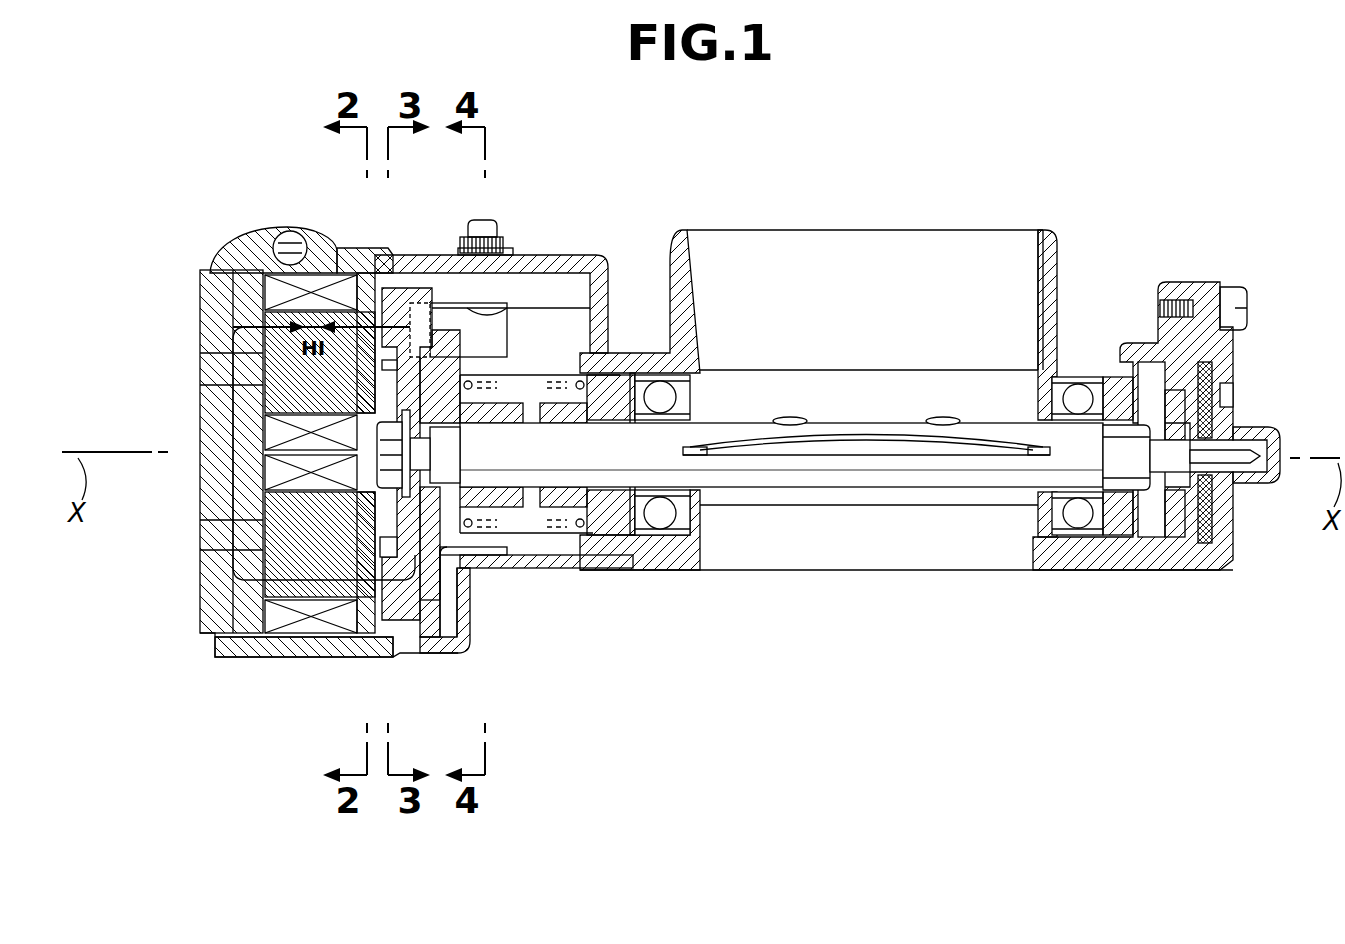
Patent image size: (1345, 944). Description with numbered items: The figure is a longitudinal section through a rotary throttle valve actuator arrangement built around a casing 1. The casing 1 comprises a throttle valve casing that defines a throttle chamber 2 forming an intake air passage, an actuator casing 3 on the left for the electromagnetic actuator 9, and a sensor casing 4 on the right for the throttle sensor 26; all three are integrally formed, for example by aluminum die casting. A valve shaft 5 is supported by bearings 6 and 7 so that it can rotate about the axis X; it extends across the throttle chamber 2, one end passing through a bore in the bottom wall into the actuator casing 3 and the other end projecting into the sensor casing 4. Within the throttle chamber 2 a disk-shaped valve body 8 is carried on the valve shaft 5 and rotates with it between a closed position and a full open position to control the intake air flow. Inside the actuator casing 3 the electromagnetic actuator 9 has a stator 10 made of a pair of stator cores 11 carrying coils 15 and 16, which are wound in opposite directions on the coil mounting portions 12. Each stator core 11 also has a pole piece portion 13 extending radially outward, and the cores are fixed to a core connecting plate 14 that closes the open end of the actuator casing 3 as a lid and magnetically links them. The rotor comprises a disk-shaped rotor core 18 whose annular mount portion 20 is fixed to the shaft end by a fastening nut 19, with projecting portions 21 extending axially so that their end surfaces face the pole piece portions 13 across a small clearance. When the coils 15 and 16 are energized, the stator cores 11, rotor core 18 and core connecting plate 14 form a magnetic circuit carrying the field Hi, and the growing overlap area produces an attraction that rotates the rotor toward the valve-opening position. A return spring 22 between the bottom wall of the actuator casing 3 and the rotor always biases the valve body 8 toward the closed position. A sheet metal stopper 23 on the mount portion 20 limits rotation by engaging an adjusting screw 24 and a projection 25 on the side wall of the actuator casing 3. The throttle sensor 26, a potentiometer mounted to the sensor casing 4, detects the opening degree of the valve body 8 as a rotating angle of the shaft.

The casing 1 is at (687, 230).
The throttle chamber 2 is at (1027, 263).
The actuator casing 3 is at (573, 265).
The sensor casing 4 is at (1175, 290).
The valve shaft 5 is at (955, 477).
The bearing 6 is at (677, 535).
The bearing 7 is at (1078, 524).
The valve body 8 is at (835, 452).
The electromagnetic actuator 9 is at (205, 268).
The stator 10 is at (270, 590).
The stator core 11 is at (277, 300).
The coil mounting portion 12 is at (278, 368).
The pole piece portion 13 is at (367, 277).
The core connecting plate 14 is at (218, 420).
The coil 15 is at (320, 280).
The coil 16 is at (270, 637).
The rotor core 18 is at (442, 620).
The fastening nut 19 is at (375, 460).
The mount portion 20 is at (462, 600).
The projecting portion 21 is at (396, 300).
The return spring 22 is at (470, 527).
The stopper 23 is at (458, 323).
The adjusting screw 24 is at (483, 222).
The projection 25 is at (505, 552).
The throttle sensor 26 is at (1205, 546).